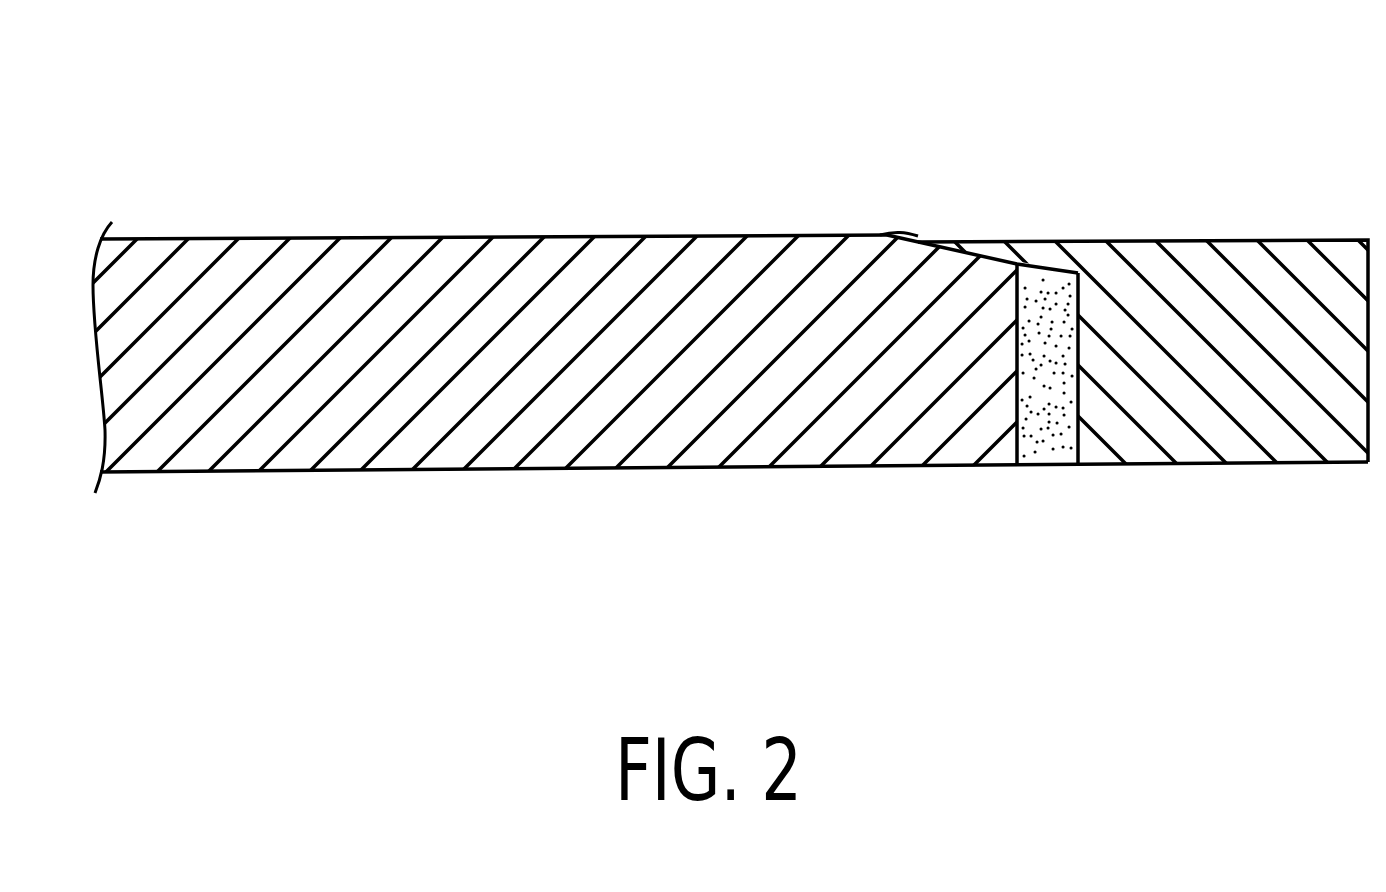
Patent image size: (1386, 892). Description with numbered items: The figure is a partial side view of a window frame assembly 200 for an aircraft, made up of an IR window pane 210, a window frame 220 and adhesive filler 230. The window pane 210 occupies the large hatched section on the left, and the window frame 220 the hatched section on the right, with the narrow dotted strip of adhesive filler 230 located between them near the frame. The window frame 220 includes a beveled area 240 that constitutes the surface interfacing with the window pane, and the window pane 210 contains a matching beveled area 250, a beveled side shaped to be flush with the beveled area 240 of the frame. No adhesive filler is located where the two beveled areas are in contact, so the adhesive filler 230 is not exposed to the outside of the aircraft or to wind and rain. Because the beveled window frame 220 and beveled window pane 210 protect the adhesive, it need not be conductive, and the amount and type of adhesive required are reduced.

The window frame assembly 200 is at (625, 158).
The IR window pane 210 is at (498, 470).
The window frame 220 is at (1245, 465).
The adhesive filler 230 is at (1048, 467).
The beveled area 240 is at (997, 242).
The beveled area 250 is at (915, 243).